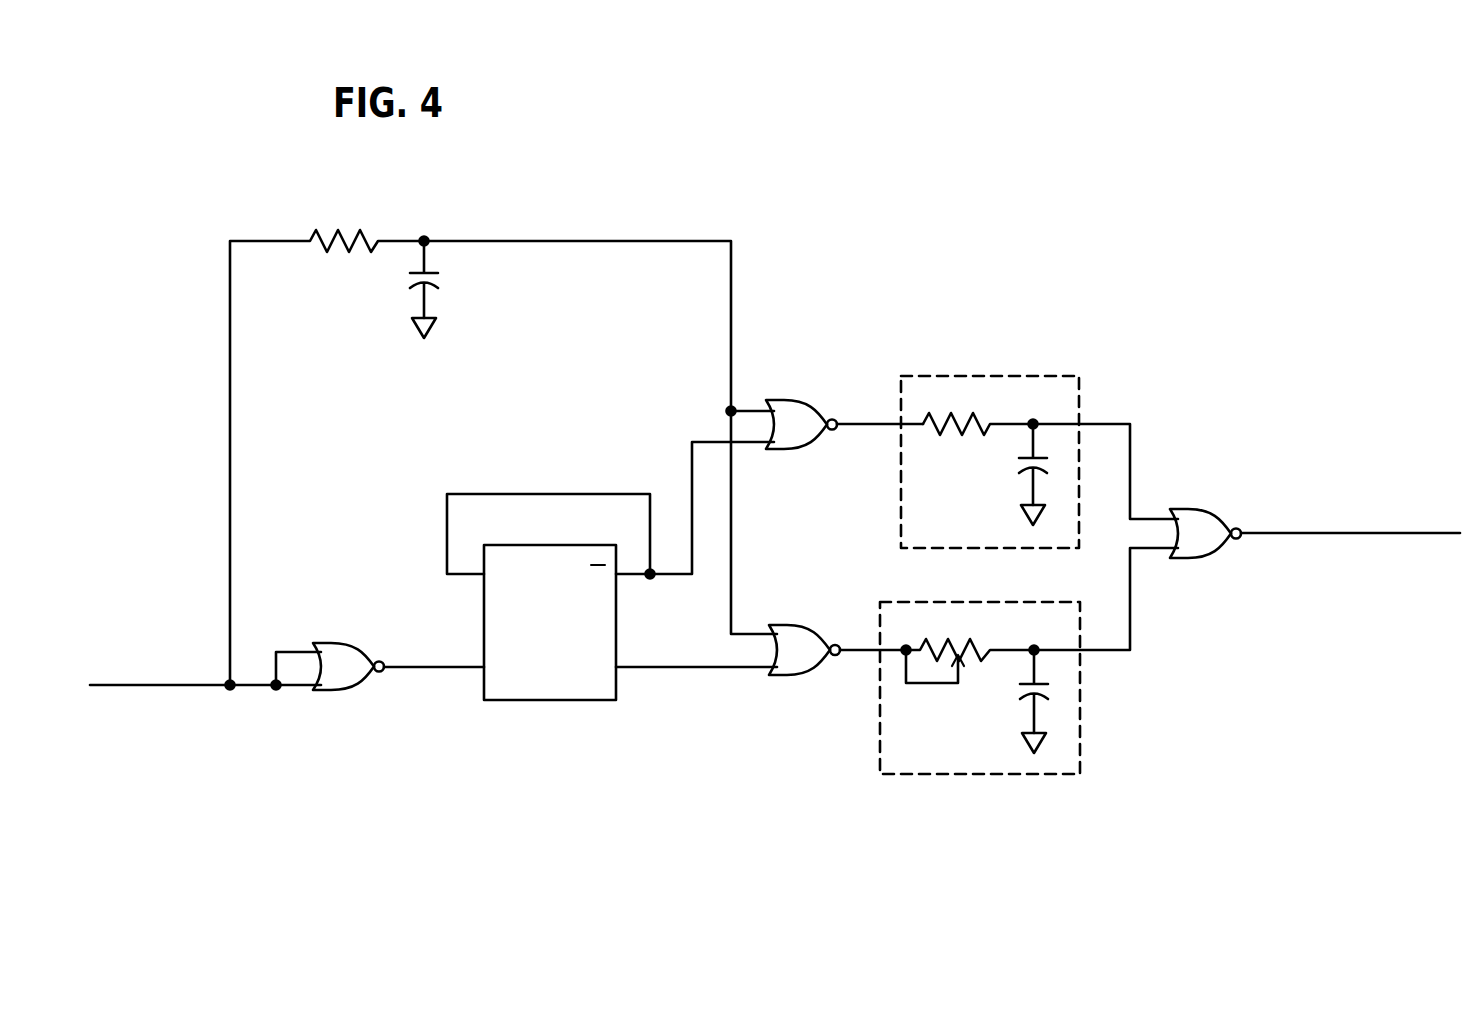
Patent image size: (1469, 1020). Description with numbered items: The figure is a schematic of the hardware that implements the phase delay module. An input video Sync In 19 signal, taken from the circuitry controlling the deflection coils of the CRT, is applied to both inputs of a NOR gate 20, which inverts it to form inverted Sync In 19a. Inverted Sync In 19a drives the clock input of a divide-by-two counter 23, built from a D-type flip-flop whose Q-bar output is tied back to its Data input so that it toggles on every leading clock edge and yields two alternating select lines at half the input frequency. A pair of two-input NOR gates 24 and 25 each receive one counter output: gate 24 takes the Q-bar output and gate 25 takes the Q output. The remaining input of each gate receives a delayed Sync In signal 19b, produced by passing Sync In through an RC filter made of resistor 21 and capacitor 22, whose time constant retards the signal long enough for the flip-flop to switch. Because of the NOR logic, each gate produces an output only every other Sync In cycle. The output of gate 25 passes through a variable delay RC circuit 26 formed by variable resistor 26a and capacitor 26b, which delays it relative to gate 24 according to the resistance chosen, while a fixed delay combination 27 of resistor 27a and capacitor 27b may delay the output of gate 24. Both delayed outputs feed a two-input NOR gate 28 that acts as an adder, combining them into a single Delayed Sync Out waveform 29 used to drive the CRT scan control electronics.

The Sync In signal 19 is at (160, 691).
The inverted Sync In 19a is at (431, 663).
The delayed Sync In signal 19b is at (699, 238).
The NOR gate 20 is at (357, 648).
The resistor 21 is at (348, 227).
The capacitor 22 is at (441, 285).
The divide-by-2 counter 23 is at (577, 702).
The NOR gate 24 is at (803, 402).
The NOR gate 25 is at (805, 626).
The variable delay RC circuit 26 is at (1029, 699).
The variable resistor 26a is at (953, 633).
The capacitor 26b is at (1017, 693).
The fixed delay combination 27 is at (1039, 428).
The resistor 27a is at (952, 438).
The capacitor 27b is at (1017, 466).
The NOR gate 28 is at (1205, 510).
The Delayed Sync Out waveform 29 is at (1428, 535).